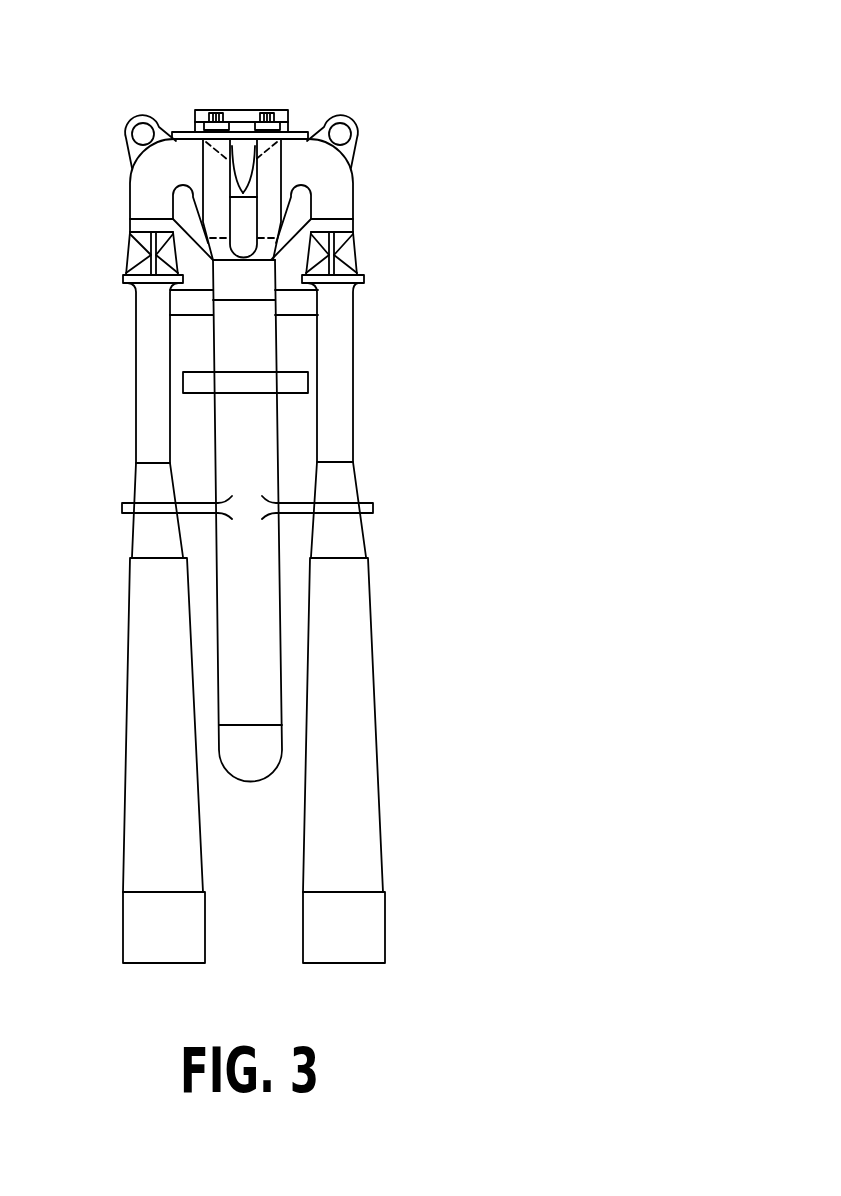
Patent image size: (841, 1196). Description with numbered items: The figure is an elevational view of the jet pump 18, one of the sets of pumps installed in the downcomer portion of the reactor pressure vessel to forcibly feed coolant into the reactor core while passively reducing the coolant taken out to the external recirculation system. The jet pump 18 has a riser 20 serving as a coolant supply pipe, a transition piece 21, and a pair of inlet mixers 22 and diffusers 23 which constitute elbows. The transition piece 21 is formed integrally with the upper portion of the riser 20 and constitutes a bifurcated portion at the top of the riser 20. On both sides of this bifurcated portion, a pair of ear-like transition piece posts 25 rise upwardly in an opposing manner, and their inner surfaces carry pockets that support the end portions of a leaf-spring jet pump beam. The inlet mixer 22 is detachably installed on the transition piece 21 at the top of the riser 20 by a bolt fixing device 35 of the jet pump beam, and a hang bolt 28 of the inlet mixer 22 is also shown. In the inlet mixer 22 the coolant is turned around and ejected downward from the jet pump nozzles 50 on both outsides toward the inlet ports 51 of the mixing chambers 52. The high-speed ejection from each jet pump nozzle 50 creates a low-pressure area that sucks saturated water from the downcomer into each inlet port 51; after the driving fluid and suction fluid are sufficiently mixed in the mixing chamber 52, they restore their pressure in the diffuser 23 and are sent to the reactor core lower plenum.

The jet pump 18 is at (403, 79).
The riser 20 is at (280, 430).
The transition piece 21 is at (266, 252).
The inlet mixer 22 is at (130, 196).
The diffuser 23 is at (137, 653).
The transition piece post 25 is at (291, 113).
The hang bolt 28 is at (137, 118).
The bolt fixing device 35 is at (215, 105).
The jet pump nozzle 50 is at (133, 239).
The inlet port 51 is at (125, 271).
The mixing chamber 52 is at (137, 343).